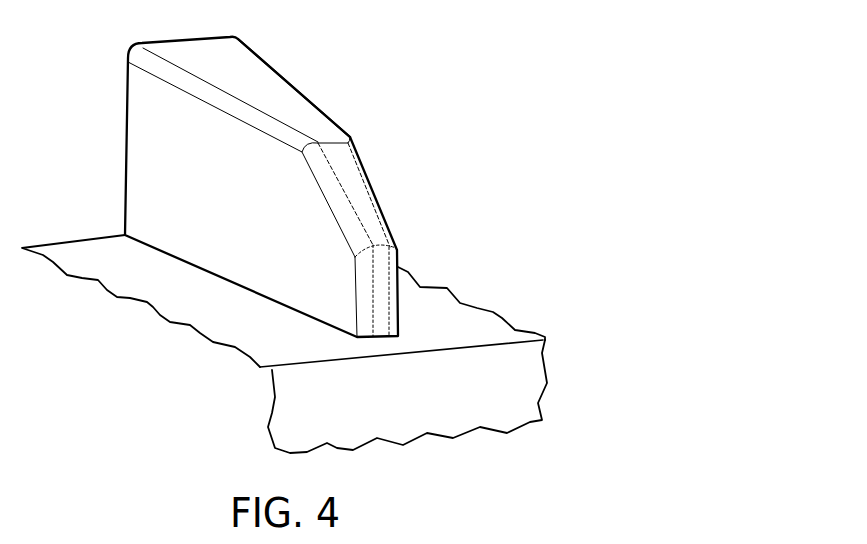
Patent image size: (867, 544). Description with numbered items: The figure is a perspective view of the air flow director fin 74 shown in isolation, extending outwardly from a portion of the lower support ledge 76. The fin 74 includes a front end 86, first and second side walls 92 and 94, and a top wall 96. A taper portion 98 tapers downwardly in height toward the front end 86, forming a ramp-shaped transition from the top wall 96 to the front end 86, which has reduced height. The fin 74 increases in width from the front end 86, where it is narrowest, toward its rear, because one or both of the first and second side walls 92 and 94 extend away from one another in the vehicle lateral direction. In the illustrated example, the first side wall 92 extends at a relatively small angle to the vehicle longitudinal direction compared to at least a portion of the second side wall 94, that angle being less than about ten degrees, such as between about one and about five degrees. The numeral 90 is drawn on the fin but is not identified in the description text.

The air flow director fin 74 is at (450, 84).
The lower support ledge 76 is at (495, 330).
The front end 86 is at (383, 288).
The wedge body 90 is at (125, 153).
The first side wall 92 is at (202, 253).
The second side wall 94 is at (330, 120).
The top wall 96 is at (256, 88).
The taper portion 98 is at (357, 197).